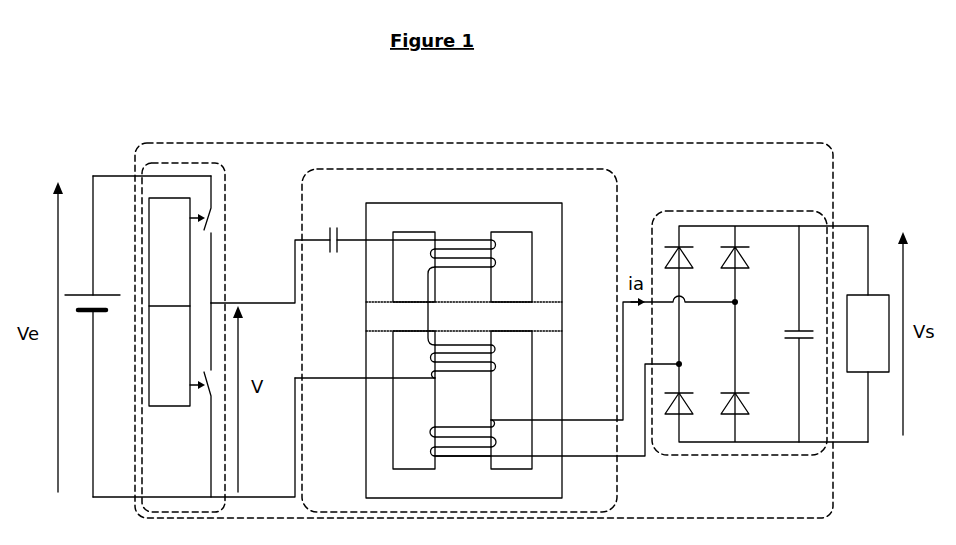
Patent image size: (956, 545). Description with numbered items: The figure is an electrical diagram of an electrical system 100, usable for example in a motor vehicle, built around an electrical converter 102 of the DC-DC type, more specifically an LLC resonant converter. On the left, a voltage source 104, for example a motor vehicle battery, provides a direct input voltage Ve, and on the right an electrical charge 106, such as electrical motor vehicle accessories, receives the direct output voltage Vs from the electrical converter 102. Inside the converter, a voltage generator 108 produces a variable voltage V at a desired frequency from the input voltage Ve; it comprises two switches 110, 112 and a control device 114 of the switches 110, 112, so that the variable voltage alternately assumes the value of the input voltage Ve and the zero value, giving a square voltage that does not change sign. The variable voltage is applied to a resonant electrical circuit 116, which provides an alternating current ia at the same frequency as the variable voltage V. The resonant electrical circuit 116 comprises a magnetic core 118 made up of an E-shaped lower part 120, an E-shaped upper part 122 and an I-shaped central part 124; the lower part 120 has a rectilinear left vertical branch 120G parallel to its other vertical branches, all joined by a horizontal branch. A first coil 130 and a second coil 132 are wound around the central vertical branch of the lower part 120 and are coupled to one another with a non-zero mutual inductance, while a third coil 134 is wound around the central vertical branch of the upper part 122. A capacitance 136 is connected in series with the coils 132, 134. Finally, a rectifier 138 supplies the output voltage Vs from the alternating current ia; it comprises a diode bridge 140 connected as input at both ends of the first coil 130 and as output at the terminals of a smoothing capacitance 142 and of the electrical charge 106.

The electrical system 100 is at (614, 114).
The electrical converter 102 is at (446, 132).
The voltage source 104 is at (109, 293).
The electrical charge 106 is at (868, 334).
The voltage generator 108 is at (225, 196).
The switch 110 is at (219, 223).
The switch 112 is at (202, 402).
The control device 114 is at (177, 302).
The resonant electrical circuit 116 is at (541, 164).
The magnetic core 118 is at (428, 350).
The E-shaped lower part 120 is at (464, 350).
The left vertical branch 120G is at (373, 386).
The E-shaped upper part 122 is at (462, 277).
The I-shaped central part 124 is at (463, 343).
The first coil 130 is at (436, 427).
The second coil 132 is at (497, 373).
The third coil 134 is at (512, 268).
The capacitance 136 is at (329, 231).
The rectifier 138 is at (695, 206).
The diode bridge 140 is at (759, 351).
The smoothing capacitance 142 is at (797, 329).